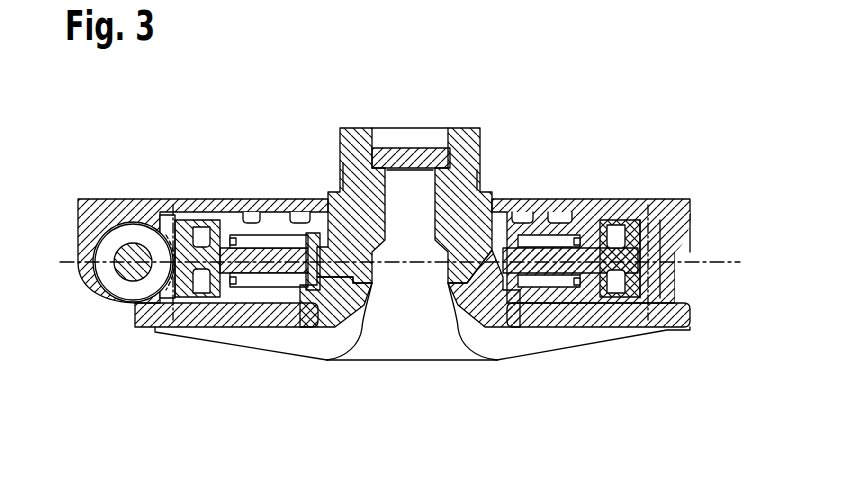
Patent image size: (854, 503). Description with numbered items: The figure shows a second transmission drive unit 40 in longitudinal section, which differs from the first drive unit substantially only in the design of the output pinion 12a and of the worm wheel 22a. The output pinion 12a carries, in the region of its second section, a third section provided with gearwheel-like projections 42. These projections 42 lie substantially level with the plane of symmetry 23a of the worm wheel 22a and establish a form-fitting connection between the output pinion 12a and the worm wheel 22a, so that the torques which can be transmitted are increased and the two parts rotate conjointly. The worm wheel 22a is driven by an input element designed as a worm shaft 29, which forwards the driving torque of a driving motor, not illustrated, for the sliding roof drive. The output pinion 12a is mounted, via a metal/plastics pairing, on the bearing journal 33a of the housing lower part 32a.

The output pinion 12a is at (354, 114).
The second transmission drive unit 40 is at (620, 129).
The worm wheel 22a is at (636, 224).
The plane of symmetry 23a is at (712, 258).
The worm shaft 29 is at (137, 270).
The housing lower part 32a is at (250, 312).
The projections 42 is at (317, 302).
The bearing journal 33a is at (368, 242).